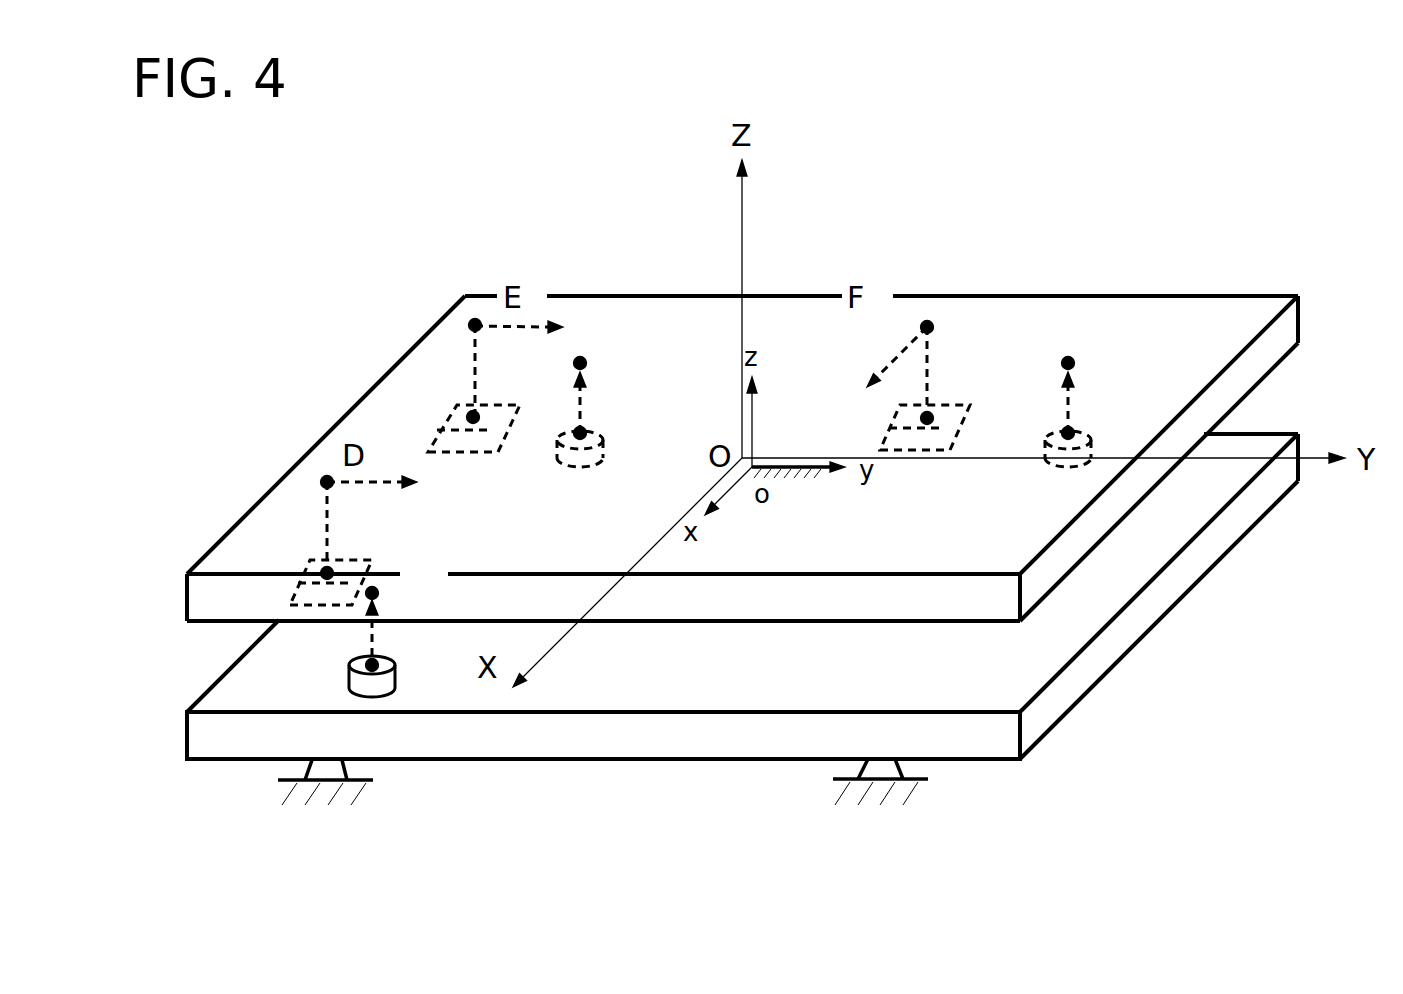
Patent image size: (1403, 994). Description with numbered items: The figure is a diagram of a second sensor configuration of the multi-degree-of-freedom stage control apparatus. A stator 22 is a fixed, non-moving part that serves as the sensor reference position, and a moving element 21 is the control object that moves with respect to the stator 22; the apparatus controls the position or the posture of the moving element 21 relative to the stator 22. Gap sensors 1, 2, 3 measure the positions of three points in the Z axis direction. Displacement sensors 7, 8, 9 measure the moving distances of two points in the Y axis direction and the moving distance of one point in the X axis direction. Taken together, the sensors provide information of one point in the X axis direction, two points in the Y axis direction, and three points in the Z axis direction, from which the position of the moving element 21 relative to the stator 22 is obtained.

The gap sensor 1 is at (348, 678).
The gap sensor 2 is at (553, 452).
The gap sensor 3 is at (1088, 427).
The displacement sensor 7 is at (313, 567).
The displacement sensor 8 is at (457, 405).
The displacement sensor 9 is at (947, 417).
The moving element 21 is at (1239, 390).
The stator 22 is at (1137, 621).